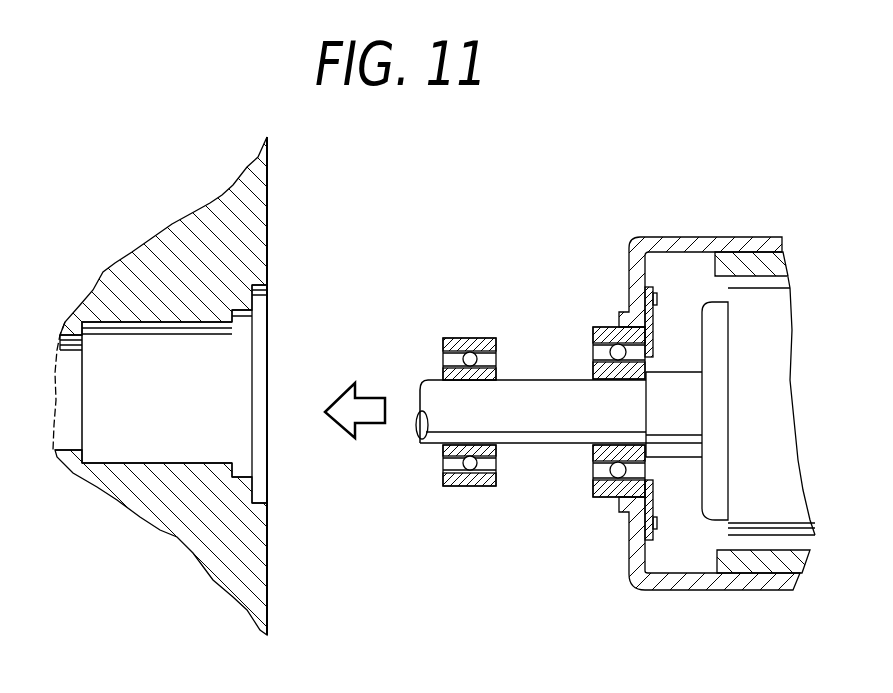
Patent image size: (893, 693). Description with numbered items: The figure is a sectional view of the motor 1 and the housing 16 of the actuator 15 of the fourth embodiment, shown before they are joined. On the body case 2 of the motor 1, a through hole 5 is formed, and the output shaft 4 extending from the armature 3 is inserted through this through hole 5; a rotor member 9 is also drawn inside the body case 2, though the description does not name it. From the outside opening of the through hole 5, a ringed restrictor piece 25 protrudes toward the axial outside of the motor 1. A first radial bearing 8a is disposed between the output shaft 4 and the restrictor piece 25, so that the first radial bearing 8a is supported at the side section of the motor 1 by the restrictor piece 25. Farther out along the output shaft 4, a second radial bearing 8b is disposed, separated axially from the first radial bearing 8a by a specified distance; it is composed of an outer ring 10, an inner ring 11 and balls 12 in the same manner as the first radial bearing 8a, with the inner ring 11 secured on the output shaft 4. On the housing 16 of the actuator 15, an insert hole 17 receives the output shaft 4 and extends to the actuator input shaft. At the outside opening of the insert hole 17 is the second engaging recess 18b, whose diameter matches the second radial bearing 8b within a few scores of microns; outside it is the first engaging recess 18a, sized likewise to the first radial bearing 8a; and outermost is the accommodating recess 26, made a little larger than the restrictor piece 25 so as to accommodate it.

The motor 1 is at (626, 386).
The body case 2 is at (702, 386).
The armature 3 is at (780, 305).
The output shaft 4 is at (530, 389).
The through hole 5 is at (625, 506).
The first radial bearing 8a is at (590, 411).
The second radial bearing 8b is at (467, 490).
The rotor 9 is at (653, 340).
The outer ring 10 is at (610, 338).
The inner ring 11 is at (592, 372).
The balls 12 is at (596, 352).
The actuator 15 is at (167, 386).
The housing 16 is at (217, 212).
The insert hole 17 is at (63, 367).
The first engaging recess 18a is at (230, 327).
The second engaging recess 18b is at (155, 327).
The ringed restrictor piece 25 is at (622, 320).
The accommodating recess 26 is at (268, 297).